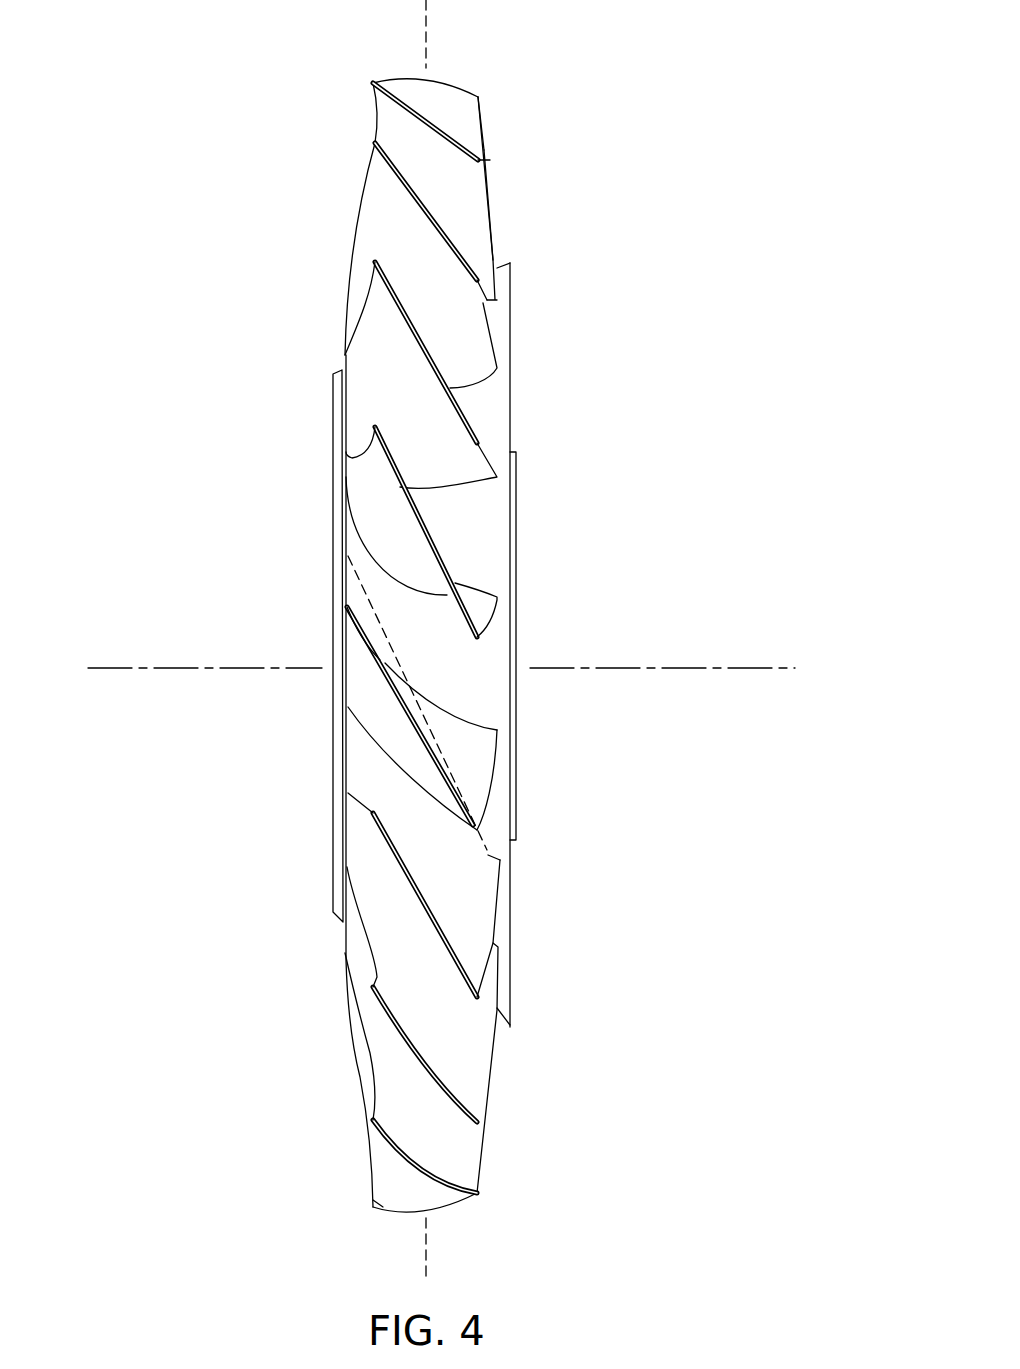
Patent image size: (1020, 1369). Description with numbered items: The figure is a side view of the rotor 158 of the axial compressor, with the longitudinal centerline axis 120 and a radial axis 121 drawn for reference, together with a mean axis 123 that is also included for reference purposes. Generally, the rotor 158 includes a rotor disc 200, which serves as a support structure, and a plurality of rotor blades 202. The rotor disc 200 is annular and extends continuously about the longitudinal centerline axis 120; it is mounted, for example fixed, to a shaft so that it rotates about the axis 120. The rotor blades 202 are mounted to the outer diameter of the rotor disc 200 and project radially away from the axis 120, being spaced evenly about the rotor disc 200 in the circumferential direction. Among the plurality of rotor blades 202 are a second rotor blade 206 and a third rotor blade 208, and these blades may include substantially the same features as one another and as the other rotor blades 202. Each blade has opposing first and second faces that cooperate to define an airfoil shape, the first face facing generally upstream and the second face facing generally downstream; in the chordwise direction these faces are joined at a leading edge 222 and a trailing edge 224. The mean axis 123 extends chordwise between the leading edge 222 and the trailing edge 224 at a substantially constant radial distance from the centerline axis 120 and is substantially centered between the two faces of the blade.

The longitudinal centerline axis 120 is at (140, 668).
The radial axis 121 is at (426, 45).
The mean axis 123 is at (347, 593).
The rotor 158 is at (230, 178).
The rotor disc 200 is at (312, 655).
The rotor blades 202 is at (358, 298).
The second rotor blade 206 is at (472, 128).
The third rotor blade 208 is at (475, 232).
The leading edge 222 is at (330, 500).
The trailing edge 224 is at (512, 748).